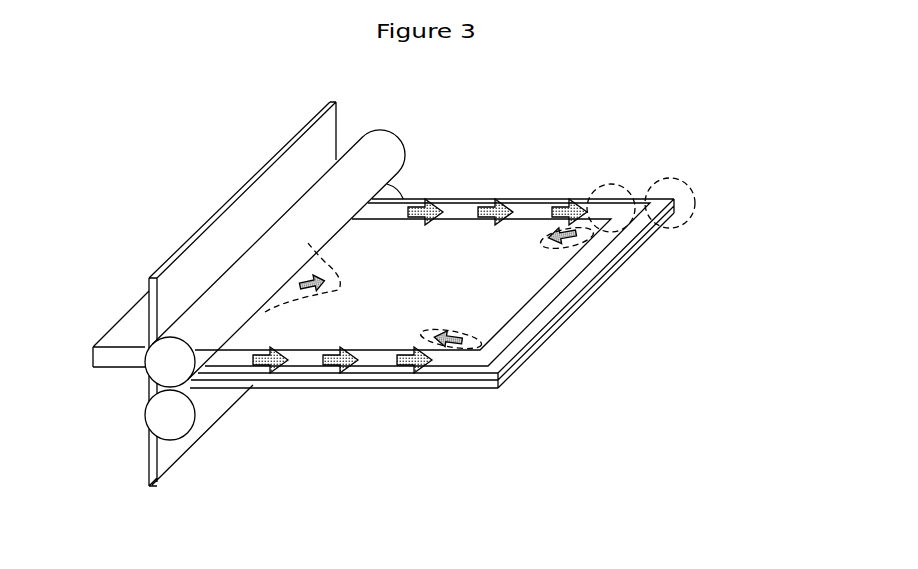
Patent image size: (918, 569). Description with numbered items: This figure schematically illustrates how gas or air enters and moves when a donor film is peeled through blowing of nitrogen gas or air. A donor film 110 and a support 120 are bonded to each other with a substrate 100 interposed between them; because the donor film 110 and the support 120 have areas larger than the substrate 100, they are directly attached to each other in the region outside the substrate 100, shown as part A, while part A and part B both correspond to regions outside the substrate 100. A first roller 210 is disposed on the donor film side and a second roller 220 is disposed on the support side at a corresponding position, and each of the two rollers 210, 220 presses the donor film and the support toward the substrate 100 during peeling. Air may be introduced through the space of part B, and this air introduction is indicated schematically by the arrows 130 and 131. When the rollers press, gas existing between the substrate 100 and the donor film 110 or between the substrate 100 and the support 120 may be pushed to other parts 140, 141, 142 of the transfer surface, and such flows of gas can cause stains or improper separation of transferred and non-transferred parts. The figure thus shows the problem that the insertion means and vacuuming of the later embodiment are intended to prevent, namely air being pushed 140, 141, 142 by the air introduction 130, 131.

The substrate 100 is at (123, 335).
The donor film 110 is at (247, 205).
The support 120 is at (165, 457).
The air introduction 130 is at (432, 198).
The air introduction 131 is at (352, 338).
The gas flow to other part 140 is at (318, 298).
The gas flow to other part 141 is at (452, 350).
The gas flow to other part 142 is at (589, 232).
The first roller 210 is at (388, 152).
The second roller 220 is at (178, 425).
The part A is at (690, 190).
The part B is at (605, 184).